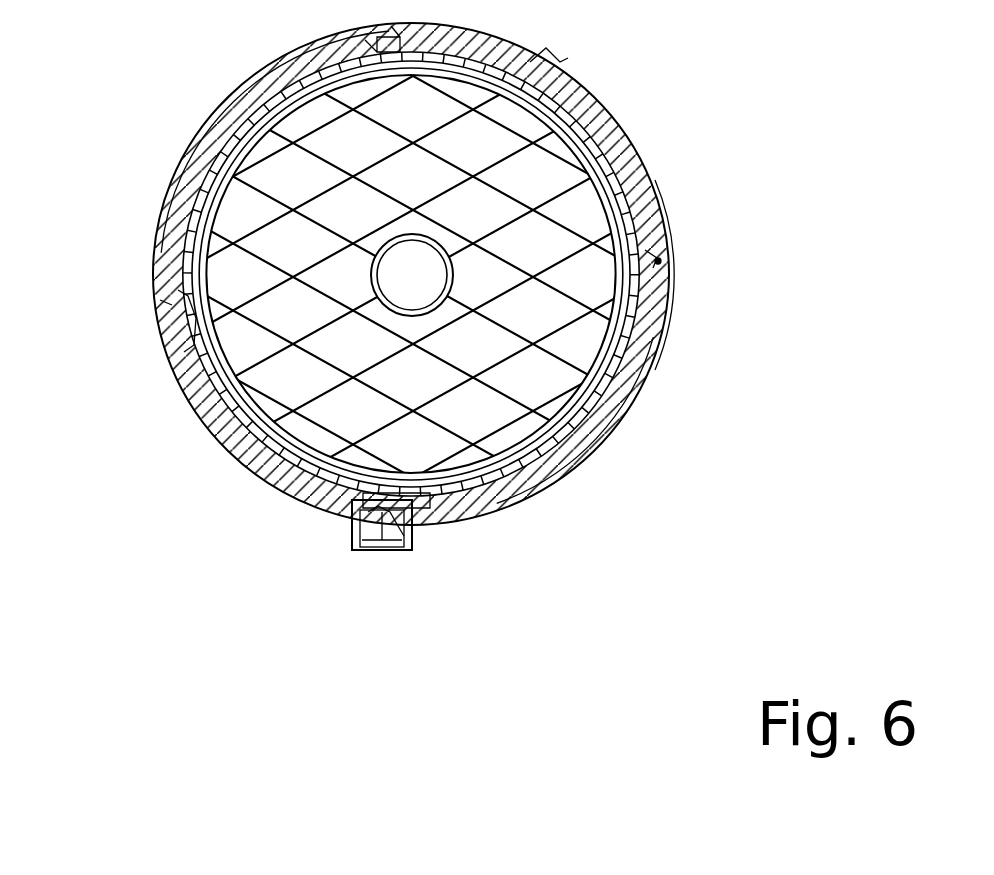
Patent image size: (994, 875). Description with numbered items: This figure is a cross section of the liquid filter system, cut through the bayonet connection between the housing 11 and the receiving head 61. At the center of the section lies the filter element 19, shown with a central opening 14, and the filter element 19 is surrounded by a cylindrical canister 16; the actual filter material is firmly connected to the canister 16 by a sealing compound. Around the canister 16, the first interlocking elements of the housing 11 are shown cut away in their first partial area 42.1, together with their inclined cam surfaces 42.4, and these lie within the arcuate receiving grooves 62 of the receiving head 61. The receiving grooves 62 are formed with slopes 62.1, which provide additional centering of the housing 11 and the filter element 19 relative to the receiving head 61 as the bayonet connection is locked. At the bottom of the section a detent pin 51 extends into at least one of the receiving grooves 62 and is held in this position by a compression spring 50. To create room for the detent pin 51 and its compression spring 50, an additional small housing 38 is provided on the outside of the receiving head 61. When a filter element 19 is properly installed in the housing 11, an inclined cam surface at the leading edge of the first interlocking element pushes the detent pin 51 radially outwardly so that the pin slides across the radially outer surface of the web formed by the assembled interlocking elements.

The housing 11 is at (183, 162).
The filter element 19 is at (232, 222).
The central opening 14 is at (377, 272).
The canister 16 is at (165, 360).
The receiving head 61 is at (660, 220).
The slopes 62.1 is at (660, 262).
The receiving grooves 62 is at (617, 393).
The first partial area 42.1 is at (551, 279).
The inclined cam surfaces 42.4 is at (592, 452).
The detent pin 51 is at (355, 522).
The compression spring 50 is at (370, 528).
The small housing 38 is at (400, 530).